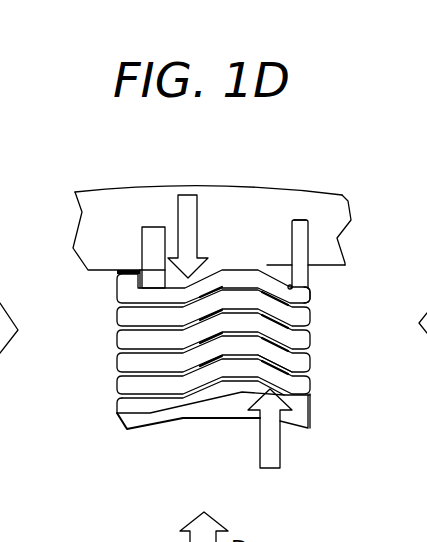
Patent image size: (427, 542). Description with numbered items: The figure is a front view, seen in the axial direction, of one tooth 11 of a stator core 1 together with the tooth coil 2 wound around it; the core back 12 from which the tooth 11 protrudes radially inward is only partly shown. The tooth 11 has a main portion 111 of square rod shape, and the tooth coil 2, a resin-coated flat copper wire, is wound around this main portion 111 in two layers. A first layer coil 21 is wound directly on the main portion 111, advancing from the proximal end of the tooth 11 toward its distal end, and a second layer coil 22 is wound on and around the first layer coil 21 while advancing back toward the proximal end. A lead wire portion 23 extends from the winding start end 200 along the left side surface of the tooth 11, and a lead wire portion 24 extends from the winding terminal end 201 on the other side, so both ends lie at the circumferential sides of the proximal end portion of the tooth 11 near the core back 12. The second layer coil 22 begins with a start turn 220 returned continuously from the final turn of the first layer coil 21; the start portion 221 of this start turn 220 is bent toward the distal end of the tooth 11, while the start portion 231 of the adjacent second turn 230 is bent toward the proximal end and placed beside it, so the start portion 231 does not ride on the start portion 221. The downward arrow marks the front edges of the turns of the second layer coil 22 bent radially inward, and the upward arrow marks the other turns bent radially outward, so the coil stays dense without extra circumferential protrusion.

The stator core 1 is at (289, 189).
The tooth 11 is at (297, 432).
The core back 12 is at (338, 199).
The main portion 111 is at (220, 263).
The tooth coil 2 is at (112, 366).
The first layer coil 21 is at (287, 267).
The second layer coil 22 is at (112, 404).
The lead wire portion 23 is at (142, 242).
The lead wire portion 24 is at (303, 219).
The winding start end 200 is at (152, 253).
The winding terminal end 201 is at (312, 283).
The start turn 220 is at (145, 405).
The start portion 221 is at (178, 402).
The second turn 230 is at (236, 395).
The start portion 231 is at (276, 368).